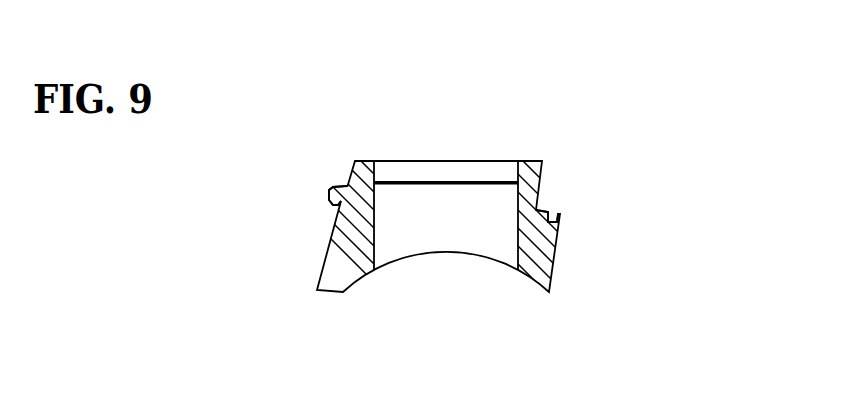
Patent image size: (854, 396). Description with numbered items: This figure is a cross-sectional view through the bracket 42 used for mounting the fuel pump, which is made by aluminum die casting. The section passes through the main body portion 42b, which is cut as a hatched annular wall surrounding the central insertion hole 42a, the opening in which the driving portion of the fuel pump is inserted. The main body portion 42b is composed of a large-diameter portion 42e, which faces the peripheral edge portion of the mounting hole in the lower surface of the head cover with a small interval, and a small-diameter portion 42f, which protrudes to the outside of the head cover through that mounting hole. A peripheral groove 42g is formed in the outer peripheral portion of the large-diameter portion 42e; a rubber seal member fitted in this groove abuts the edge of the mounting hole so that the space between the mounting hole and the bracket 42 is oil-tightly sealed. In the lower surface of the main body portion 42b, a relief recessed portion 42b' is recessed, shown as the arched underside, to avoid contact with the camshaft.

The bracket 42 is at (461, 198).
The insertion hole 42a is at (501, 181).
The main body portion 42b is at (461, 198).
The relief recessed portion 42b' is at (353, 282).
The large-diameter portion 42e is at (329, 204).
The small-diameter portion 42f is at (355, 162).
The peripheral groove 42g is at (544, 212).